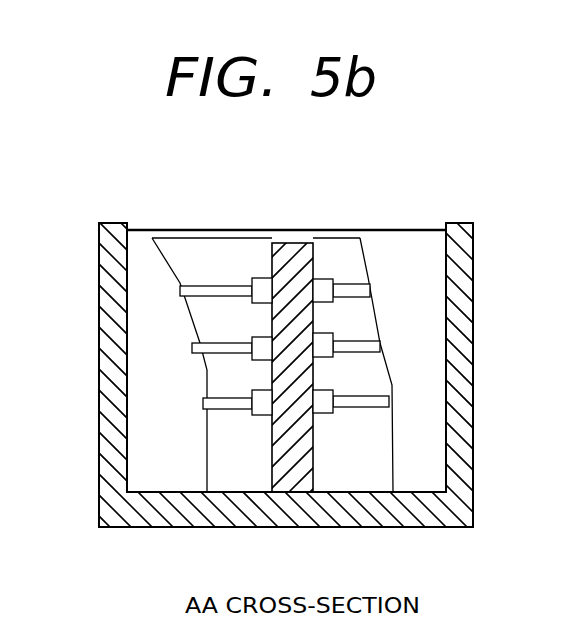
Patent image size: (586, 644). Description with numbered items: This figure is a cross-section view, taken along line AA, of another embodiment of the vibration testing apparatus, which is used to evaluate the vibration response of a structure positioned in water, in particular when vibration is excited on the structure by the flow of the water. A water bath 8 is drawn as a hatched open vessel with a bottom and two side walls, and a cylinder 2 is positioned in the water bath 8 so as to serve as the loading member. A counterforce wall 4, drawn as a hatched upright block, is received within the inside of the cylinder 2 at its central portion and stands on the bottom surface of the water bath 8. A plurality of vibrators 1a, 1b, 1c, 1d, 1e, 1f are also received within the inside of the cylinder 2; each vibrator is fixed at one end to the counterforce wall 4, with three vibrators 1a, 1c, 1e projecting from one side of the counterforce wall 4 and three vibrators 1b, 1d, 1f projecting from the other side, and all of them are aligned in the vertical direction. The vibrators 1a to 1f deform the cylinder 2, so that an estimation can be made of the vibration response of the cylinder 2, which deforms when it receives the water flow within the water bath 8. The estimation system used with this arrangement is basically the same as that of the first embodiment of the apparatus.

The vibrator 1a is at (262, 278).
The vibrator 1b is at (332, 300).
The vibrator 1c is at (262, 343).
The vibrator 1d is at (332, 357).
The vibrator 1e is at (262, 398).
The vibrator 1f is at (332, 413).
The cylinder 2 is at (363, 245).
The counterforce wall 4 is at (305, 493).
The water bath 8 is at (108, 318).